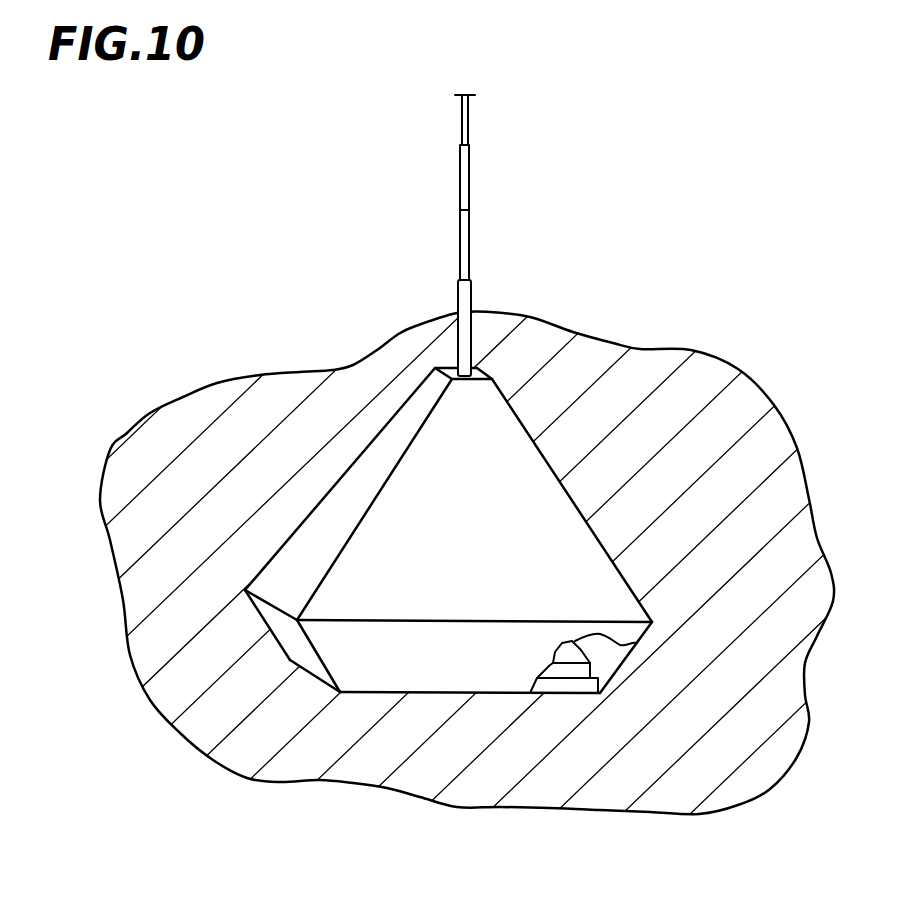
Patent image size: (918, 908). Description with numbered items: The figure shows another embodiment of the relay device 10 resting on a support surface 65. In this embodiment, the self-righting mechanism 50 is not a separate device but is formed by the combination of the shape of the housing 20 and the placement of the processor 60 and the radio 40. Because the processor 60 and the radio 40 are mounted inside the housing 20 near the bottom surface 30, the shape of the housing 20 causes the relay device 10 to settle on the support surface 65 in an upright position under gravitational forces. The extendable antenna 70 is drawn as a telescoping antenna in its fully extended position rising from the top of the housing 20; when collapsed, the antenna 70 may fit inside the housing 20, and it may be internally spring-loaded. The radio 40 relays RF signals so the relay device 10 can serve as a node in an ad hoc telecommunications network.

The relay device 10 is at (447, 446).
The housing 20 is at (525, 480).
The bottom surface 30 is at (455, 712).
The radio 40 is at (583, 667).
The self-righting mechanism 50 is at (481, 530).
The processor 60 is at (579, 687).
The support surface 65 is at (258, 733).
The extendable antenna 70 is at (472, 243).